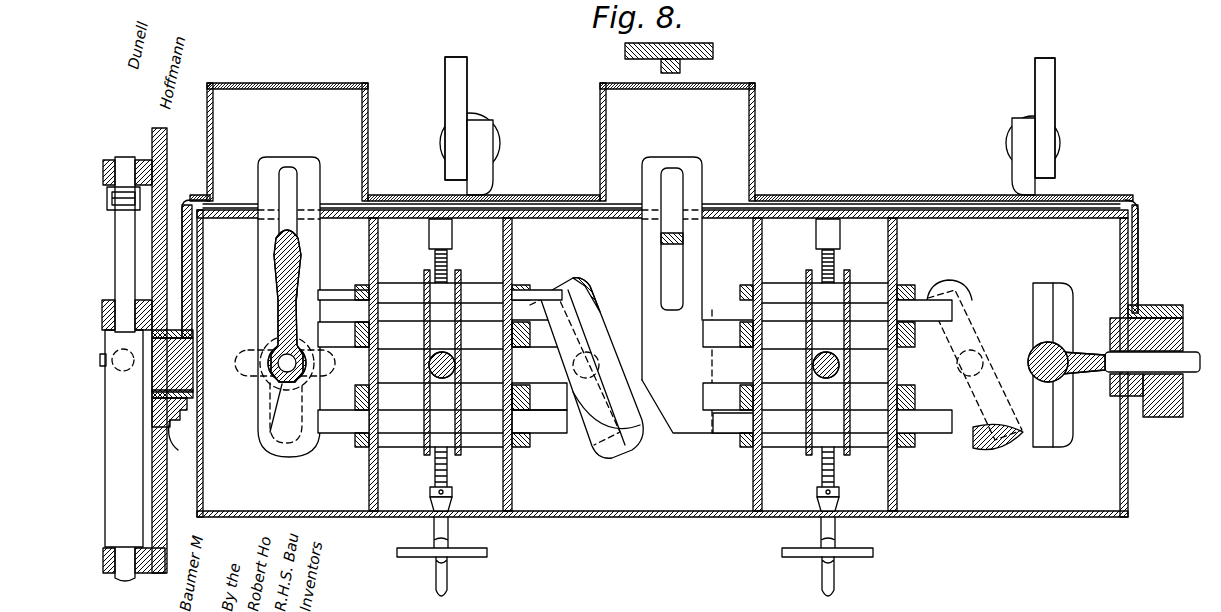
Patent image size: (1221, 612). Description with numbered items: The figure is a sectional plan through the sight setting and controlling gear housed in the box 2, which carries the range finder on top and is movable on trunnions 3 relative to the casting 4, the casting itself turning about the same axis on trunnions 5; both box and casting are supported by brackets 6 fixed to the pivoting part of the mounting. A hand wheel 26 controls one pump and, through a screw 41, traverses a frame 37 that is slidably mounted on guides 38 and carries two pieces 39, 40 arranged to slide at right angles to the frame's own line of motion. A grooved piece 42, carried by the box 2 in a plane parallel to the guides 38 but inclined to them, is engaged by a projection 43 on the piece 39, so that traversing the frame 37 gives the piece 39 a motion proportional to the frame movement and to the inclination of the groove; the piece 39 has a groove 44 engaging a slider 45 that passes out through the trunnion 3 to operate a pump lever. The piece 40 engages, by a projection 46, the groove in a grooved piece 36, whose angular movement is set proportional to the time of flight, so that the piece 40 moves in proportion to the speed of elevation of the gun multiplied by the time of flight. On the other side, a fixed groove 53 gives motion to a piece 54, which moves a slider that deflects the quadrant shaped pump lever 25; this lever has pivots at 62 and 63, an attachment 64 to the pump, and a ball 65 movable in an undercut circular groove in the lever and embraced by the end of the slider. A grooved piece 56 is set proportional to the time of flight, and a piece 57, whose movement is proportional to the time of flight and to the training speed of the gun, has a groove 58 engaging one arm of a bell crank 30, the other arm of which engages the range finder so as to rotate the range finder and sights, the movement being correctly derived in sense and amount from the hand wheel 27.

The box 2 is at (630, 517).
The trunnions 3 is at (152, 376).
The casting 4 is at (185, 215).
The trunnions 5 is at (1196, 334).
The brackets 6 is at (156, 416).
The pump lever 25 is at (122, 489).
The hand wheel 26 is at (873, 552).
The hand wheel 27 is at (452, 557).
The bell crank 30 is at (272, 264).
The grooved piece 36 is at (866, 345).
The frame 37 is at (753, 290).
The guides 38 is at (764, 262).
The piece 39 is at (712, 420).
The piece 40 is at (697, 172).
The screw 41 is at (834, 262).
The grooved piece 42 is at (967, 300).
The projection 43 is at (970, 382).
The groove 44 is at (1062, 422).
The slider 45 is at (1084, 356).
The projection 46 is at (792, 452).
The fixed groove 53 is at (575, 285).
The piece 54 is at (576, 430).
The grooved piece 56 is at (462, 300).
The piece 57 is at (320, 172).
The groove 58 is at (288, 172).
The pivot 62 is at (103, 560).
The pivot 63 is at (103, 170).
The attachment to the pump 64 is at (107, 200).
The ball 65 is at (112, 356).